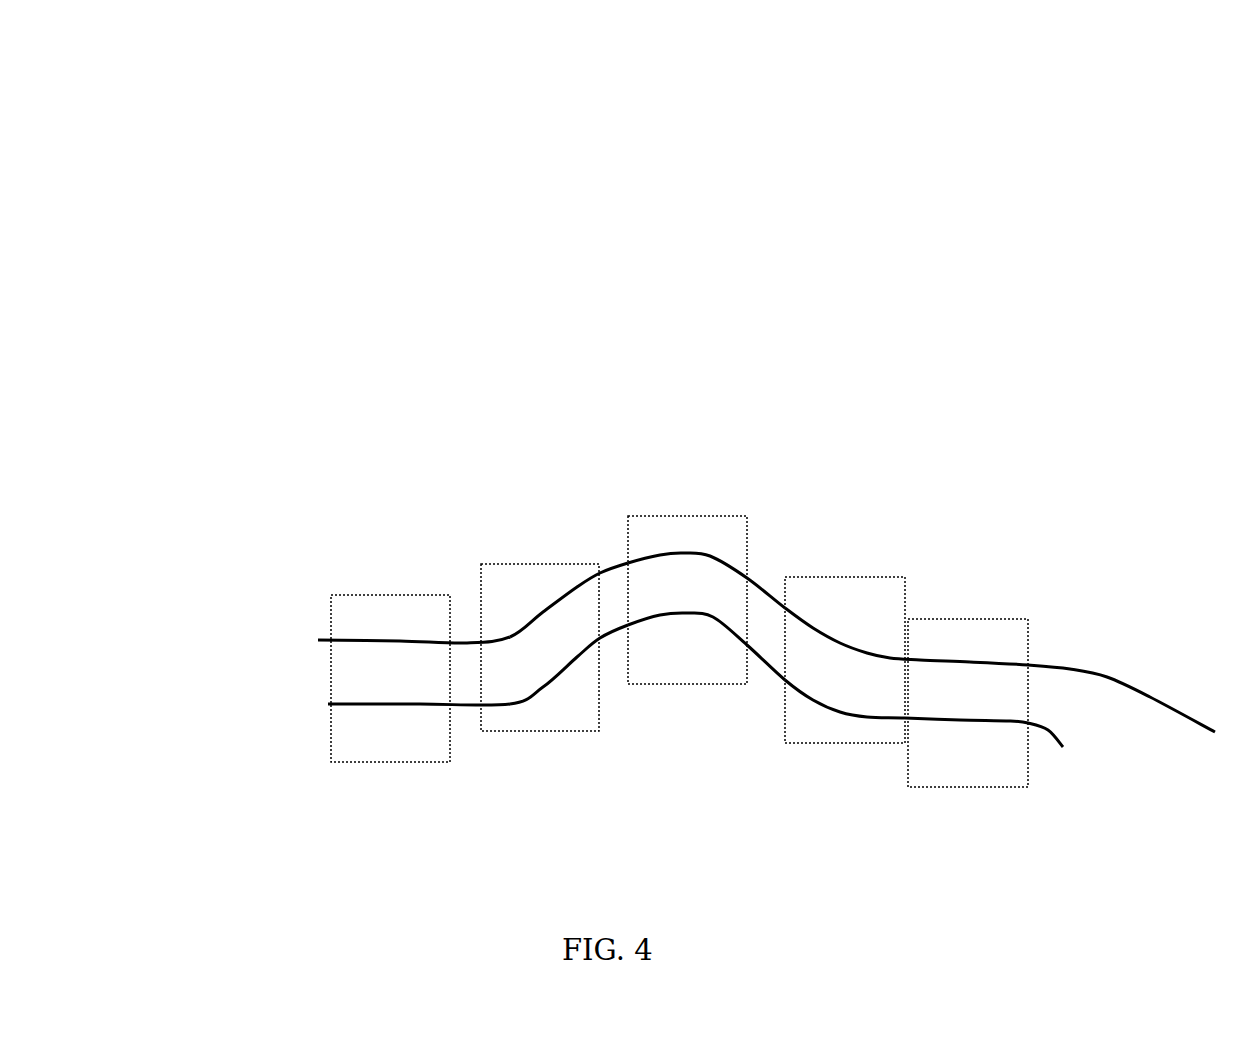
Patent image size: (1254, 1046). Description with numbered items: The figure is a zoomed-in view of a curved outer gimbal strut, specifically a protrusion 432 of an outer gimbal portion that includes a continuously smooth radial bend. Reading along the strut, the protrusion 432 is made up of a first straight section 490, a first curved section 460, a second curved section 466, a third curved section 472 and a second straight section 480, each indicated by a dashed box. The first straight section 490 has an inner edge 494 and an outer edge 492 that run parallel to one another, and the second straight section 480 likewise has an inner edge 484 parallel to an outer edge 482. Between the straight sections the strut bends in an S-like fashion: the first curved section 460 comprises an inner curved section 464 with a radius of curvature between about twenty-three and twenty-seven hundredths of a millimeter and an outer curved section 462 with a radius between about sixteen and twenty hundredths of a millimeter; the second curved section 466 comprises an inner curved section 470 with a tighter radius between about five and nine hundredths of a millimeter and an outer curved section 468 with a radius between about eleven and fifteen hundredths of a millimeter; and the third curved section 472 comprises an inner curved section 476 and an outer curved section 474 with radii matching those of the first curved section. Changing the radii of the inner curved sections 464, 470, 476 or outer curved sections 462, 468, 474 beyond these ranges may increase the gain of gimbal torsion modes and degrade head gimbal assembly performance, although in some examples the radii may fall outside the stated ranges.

The protrusion 432 is at (314, 138).
The first curved section 460 is at (482, 564).
The outer curved section 462 is at (510, 633).
The inner curved section 464 is at (528, 698).
The second curved section 466 is at (628, 518).
The outer curved section 468 is at (693, 550).
The inner curved section 470 is at (688, 615).
The third curved section 472 is at (808, 577).
The outer curved section 474 is at (843, 643).
The inner curved section 476 is at (847, 703).
The second straight section 480 is at (960, 617).
The outer edge 482 is at (983, 657).
The inner edge 484 is at (973, 722).
The first straight section 490 is at (410, 595).
The outer edge 492 is at (368, 640).
The inner edge 494 is at (377, 705).